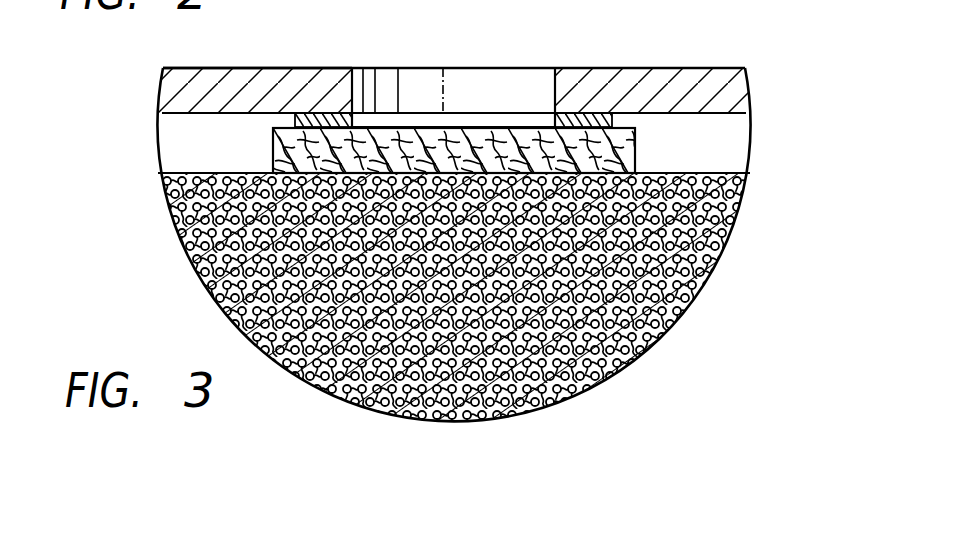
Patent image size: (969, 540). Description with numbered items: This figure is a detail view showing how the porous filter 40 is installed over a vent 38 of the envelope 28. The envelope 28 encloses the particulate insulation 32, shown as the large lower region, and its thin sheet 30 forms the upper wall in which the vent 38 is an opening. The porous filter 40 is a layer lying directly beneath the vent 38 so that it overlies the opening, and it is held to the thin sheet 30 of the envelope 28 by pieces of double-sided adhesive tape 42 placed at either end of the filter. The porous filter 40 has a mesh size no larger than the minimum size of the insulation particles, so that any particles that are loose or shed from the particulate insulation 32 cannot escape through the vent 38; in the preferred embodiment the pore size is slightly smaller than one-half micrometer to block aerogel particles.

The envelope 28 is at (278, 68).
The thin sheet 30 is at (685, 75).
The particulate insulation 32 is at (712, 261).
The vent 38 is at (555, 88).
The porous filter 40 is at (273, 151).
The double-sided adhesive tape 42 is at (296, 118).